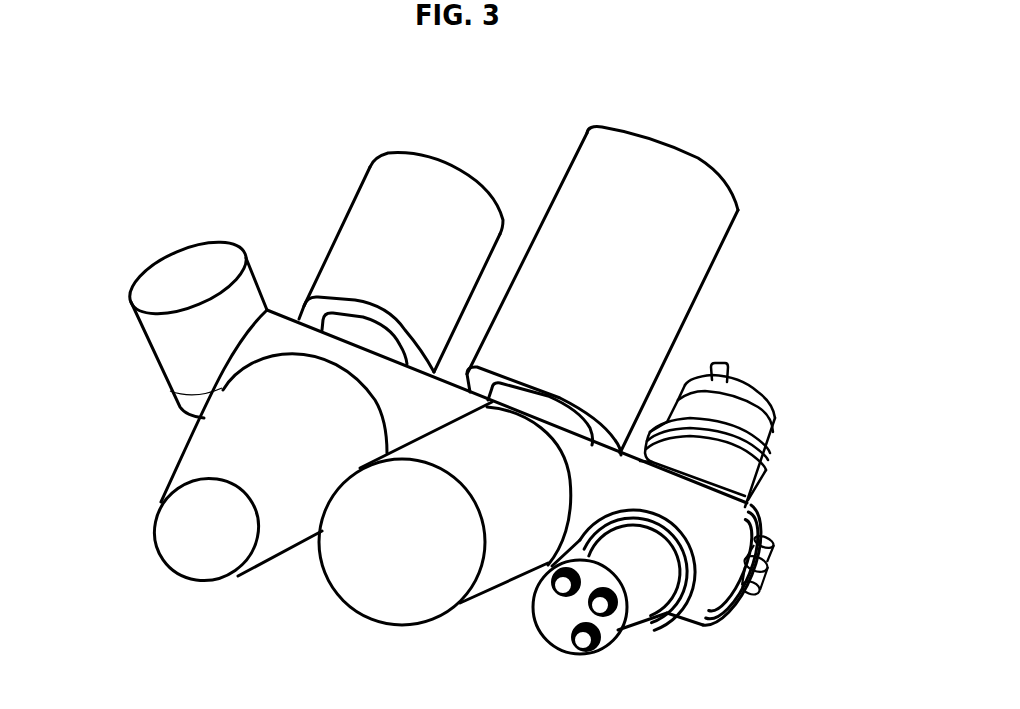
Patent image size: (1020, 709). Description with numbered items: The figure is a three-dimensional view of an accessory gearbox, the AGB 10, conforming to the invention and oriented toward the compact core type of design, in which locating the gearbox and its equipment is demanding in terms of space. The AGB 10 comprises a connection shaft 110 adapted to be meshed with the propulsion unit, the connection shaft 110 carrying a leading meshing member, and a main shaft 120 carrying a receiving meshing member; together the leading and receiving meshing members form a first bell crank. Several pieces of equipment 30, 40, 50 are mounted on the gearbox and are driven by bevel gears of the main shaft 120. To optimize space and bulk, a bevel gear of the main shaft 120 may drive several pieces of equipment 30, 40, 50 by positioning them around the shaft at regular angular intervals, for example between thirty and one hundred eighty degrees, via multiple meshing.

The AGB 10 is at (245, 158).
The equipment 30 is at (286, 560).
The equipment 40 is at (724, 167).
The equipment 50 is at (776, 388).
The connection shaft 110 is at (152, 356).
The main shaft 120 is at (773, 529).